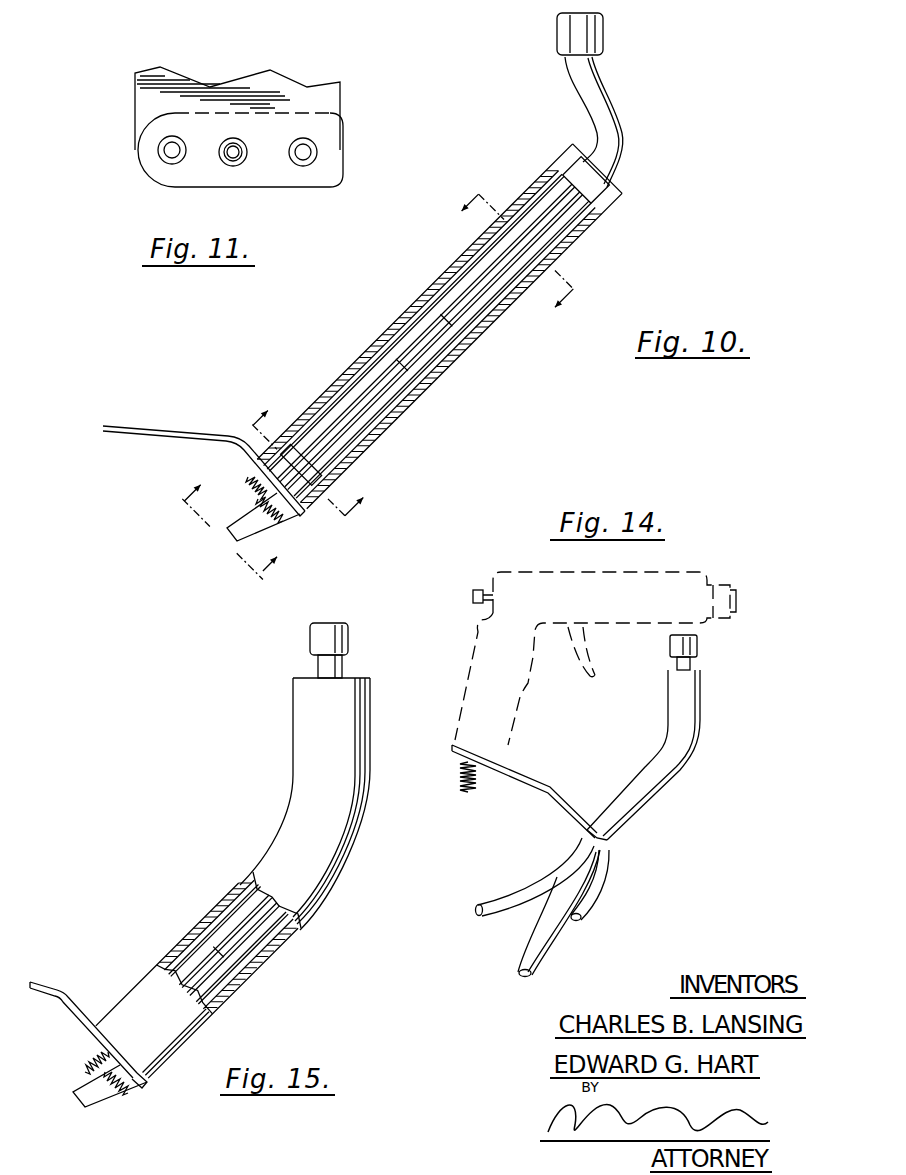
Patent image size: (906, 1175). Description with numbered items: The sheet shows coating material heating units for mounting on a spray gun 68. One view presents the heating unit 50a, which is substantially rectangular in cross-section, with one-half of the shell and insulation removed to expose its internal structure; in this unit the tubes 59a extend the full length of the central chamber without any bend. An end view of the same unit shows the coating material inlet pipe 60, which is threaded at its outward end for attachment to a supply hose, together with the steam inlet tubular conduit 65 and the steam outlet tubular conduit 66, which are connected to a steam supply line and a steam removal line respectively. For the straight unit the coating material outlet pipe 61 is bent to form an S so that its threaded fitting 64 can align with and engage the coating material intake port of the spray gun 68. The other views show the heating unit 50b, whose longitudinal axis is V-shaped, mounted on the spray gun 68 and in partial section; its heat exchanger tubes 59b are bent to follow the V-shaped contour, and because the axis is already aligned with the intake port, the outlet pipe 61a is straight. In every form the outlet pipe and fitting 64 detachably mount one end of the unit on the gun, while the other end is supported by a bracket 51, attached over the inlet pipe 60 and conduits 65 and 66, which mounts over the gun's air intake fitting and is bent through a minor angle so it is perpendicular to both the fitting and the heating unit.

In FIG. 11, the heating unit 50a is at (347, 148).
In FIG. 10, the heating unit 50a is at (505, 333).
In FIG. 14, the heating unit 50b is at (676, 770).
In FIG. 11, the bracket 51 is at (327, 100).
In FIG. 10, the bracket 51 is at (138, 436).
In FIG. 14, the bracket 51 is at (523, 773).
In FIG. 15, the bracket 51 is at (70, 992).
In FIG. 10, the tubes 59a is at (467, 343).
In FIG. 15, the heat exchanger tubes 59b is at (275, 918).
In FIG. 11, the coating material inlet pipe 60 is at (245, 160).
In FIG. 10, the coating material inlet pipe 60 is at (288, 514).
In FIG. 10, the coating material outlet pipe 61 is at (610, 114).
In FIG. 14, the outlet pipe 61a is at (699, 664).
In FIG. 15, the outlet pipe 61a is at (318, 667).
In FIG. 10, the threaded fitting 64 is at (562, 38).
In FIG. 15, the threaded fitting 64 is at (349, 639).
In FIG. 11, the steam inlet tubular conduit 65 is at (315, 158).
In FIG. 10, the steam inlet tubular conduit 65 is at (232, 522).
In FIG. 14, the steam inlet tubular conduit 65 is at (600, 838).
In FIG. 15, the steam inlet tubular conduit 65 is at (90, 1100).
In FIG. 11, the steam outlet tubular conduit 66 is at (168, 162).
In FIG. 14, the spray gun 68 is at (652, 573).